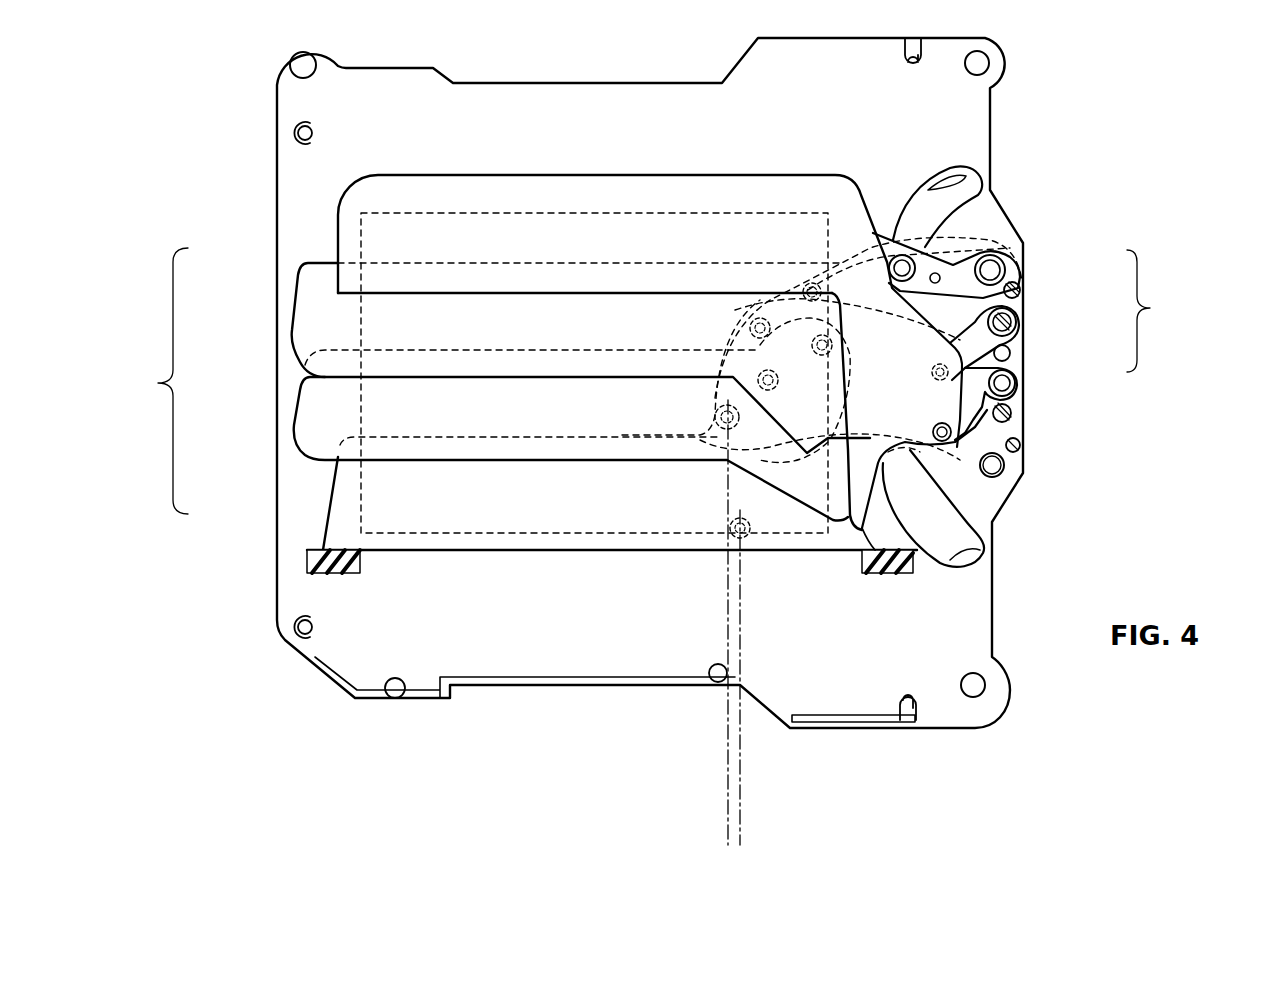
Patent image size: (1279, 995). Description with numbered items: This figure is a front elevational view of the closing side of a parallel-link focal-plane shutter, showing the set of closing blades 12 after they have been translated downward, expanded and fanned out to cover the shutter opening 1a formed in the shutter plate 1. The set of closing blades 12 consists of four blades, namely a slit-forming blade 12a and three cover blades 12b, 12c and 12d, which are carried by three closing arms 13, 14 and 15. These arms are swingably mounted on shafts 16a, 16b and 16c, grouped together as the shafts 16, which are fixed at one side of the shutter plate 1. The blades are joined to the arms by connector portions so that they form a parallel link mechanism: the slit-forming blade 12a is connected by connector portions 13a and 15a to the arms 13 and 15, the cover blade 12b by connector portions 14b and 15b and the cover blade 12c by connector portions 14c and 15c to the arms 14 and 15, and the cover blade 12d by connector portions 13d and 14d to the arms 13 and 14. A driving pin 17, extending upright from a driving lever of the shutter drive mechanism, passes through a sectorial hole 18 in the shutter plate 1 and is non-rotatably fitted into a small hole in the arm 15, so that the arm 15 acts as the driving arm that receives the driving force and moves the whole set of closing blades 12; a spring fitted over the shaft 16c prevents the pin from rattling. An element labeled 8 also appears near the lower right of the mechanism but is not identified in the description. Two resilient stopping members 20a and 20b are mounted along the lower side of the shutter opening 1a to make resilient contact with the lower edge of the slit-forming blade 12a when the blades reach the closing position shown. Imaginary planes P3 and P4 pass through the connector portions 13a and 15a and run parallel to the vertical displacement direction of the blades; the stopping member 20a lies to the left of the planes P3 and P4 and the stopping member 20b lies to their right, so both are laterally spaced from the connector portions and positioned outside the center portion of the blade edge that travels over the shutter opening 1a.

The shutter plate 1 is at (589, 95).
The shutter opening 1a is at (474, 222).
The lever 8 is at (950, 560).
The set of closing blades 12 is at (152, 381).
The slit-forming blade 12a is at (347, 505).
The cover blade 12b is at (313, 410).
The cover blade 12c is at (313, 328).
The cover blade 12d is at (338, 242).
The closing arm 13 is at (1020, 418).
The connector portion 13a is at (748, 545).
The connector portion 13d is at (946, 442).
The closing arm 14 is at (960, 372).
The connector portion 14b is at (758, 378).
The connector portion 14c is at (848, 360).
The connector portion 14d is at (933, 365).
The closing arm 15 is at (957, 270).
The connector portion 15a is at (715, 415).
The connector portion 15b is at (750, 324).
The connector portion 15c is at (800, 290).
The shafts 16 is at (1158, 311).
The shaft 16a is at (1020, 383).
The shaft 16b is at (1020, 318).
The shaft 16c is at (1022, 262).
The driving pin 17 is at (902, 255).
The sectorial hole 18 is at (937, 187).
The resilient stopping member 20a is at (335, 575).
The resilient stopping member 20b is at (875, 575).
The imaginary plane P3 is at (745, 782).
The imaginary plane P4 is at (725, 776).